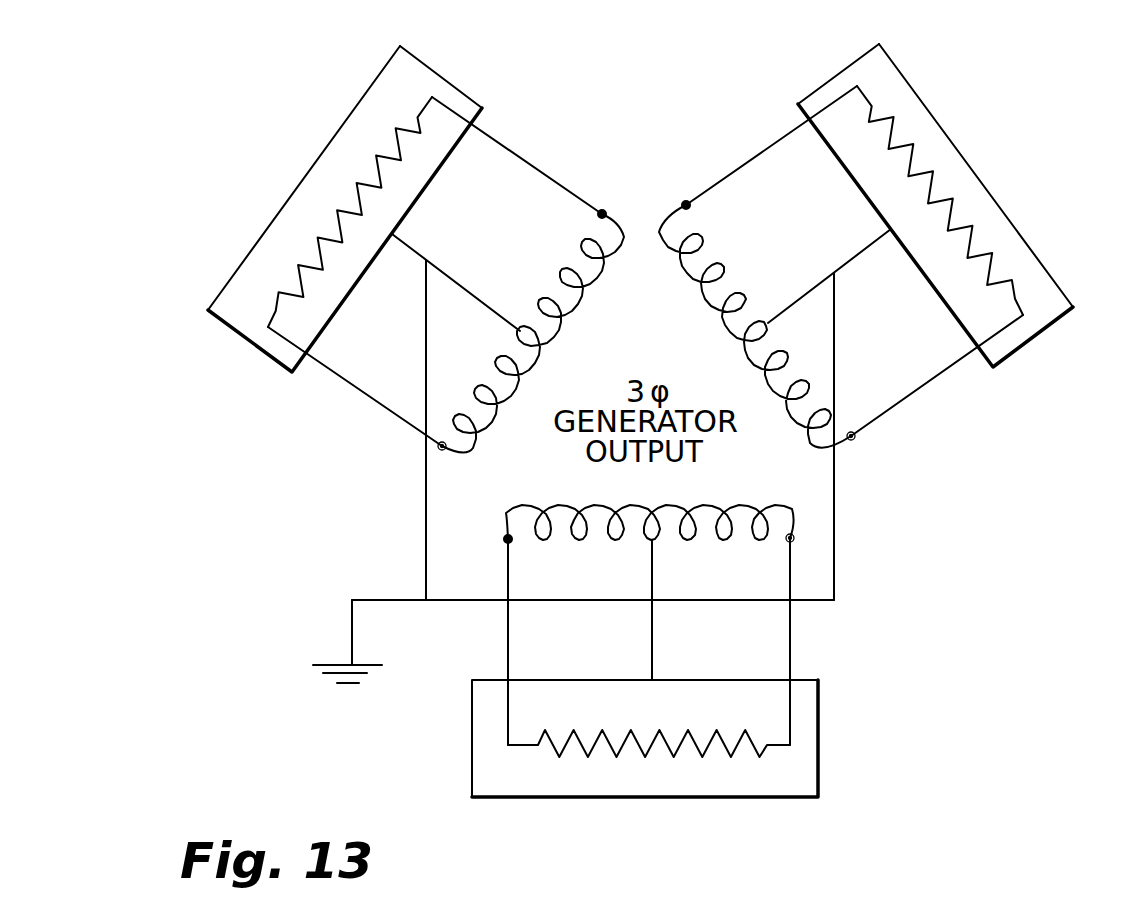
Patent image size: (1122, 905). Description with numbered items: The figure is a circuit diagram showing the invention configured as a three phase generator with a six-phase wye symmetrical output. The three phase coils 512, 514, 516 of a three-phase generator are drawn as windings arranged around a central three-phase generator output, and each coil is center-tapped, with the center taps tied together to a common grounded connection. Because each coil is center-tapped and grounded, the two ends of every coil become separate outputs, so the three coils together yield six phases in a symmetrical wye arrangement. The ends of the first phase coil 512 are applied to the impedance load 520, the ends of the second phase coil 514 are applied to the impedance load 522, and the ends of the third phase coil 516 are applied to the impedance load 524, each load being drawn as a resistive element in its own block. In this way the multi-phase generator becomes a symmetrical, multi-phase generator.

The phase coil 512 is at (548, 288).
The phase coil 514 is at (733, 266).
The phase coil 516 is at (682, 528).
The impedance load 520 is at (351, 111).
The impedance load 522 is at (981, 182).
The impedance load 524 is at (650, 797).